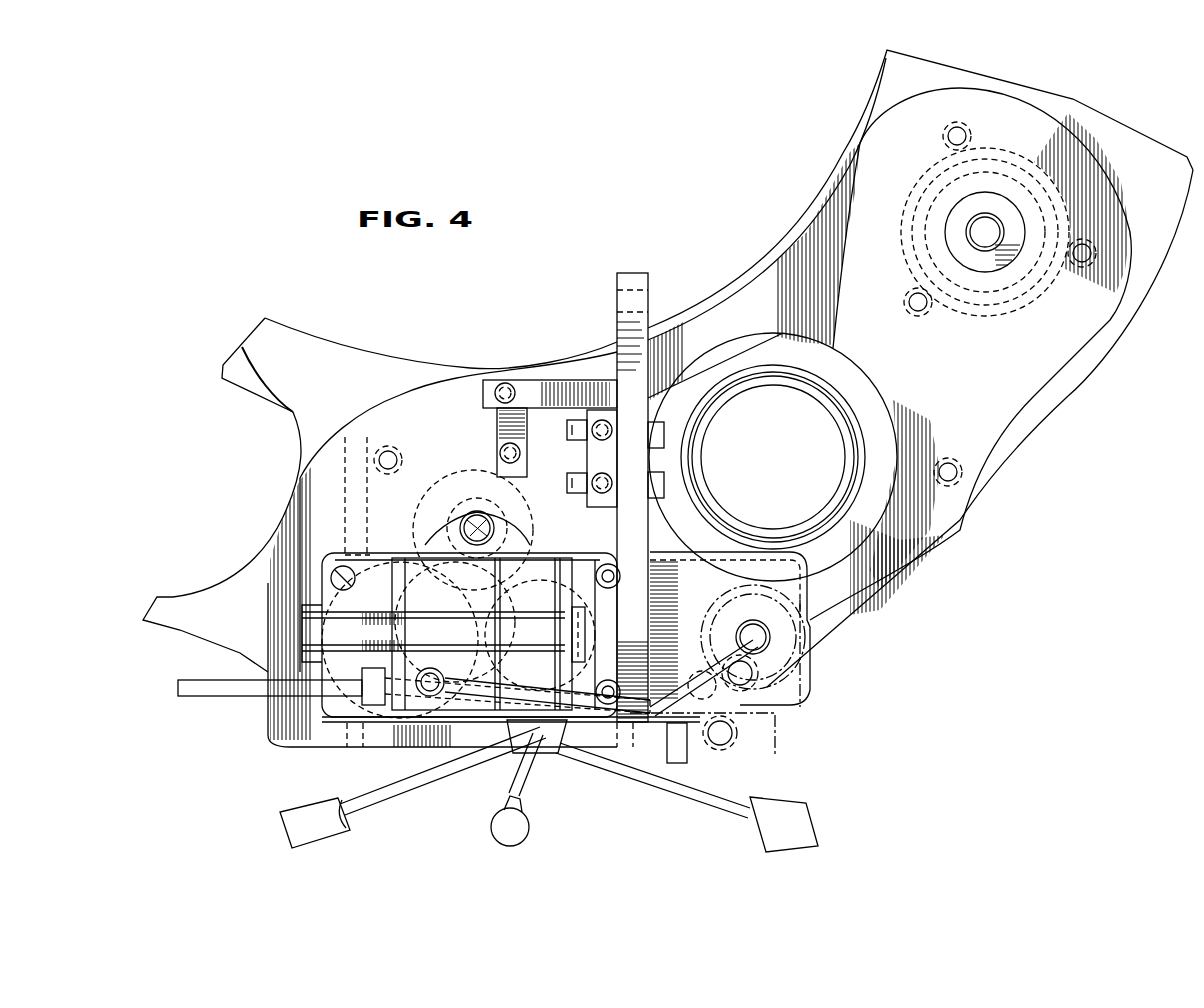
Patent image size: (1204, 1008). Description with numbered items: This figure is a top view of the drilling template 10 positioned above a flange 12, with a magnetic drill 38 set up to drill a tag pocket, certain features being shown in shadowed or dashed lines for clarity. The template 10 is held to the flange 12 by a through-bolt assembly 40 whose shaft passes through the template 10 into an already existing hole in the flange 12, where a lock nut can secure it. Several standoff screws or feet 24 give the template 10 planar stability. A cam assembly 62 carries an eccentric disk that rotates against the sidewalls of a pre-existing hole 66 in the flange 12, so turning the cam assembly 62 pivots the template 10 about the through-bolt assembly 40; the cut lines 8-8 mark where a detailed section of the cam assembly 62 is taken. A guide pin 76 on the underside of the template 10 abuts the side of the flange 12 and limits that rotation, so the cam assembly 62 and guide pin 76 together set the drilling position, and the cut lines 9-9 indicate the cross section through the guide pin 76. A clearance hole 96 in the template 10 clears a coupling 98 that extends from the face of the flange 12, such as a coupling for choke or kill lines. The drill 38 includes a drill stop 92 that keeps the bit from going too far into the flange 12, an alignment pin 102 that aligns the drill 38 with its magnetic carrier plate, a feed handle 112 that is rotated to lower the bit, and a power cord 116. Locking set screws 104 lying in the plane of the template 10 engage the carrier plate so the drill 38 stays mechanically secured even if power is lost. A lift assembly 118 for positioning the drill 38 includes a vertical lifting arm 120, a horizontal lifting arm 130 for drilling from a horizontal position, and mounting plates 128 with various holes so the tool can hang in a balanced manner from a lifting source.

The template 10 is at (803, 237).
The flange 12 is at (262, 330).
The foot 24 is at (958, 121).
The drill 38 is at (546, 778).
The through-bolt assembly 40 is at (1000, 219).
The cam assembly 62 is at (477, 498).
The pre-existing hole 66 is at (440, 470).
The guide pin 76 is at (765, 688).
The drill stop 92 is at (698, 697).
The clearance hole 96 is at (868, 378).
The coupling 98 is at (852, 447).
The alignment pin 102 is at (332, 578).
The locking set screws 104 is at (347, 533).
The feed handle 112 is at (328, 834).
The power cord 116 is at (232, 697).
The lift assembly 118 is at (602, 410).
The vertical lifting arm 120 is at (635, 588).
The mounting plates 128 is at (523, 385).
The horizontal lifting arm 130 is at (630, 272).
The cut lines 8- 8 is at (380, 505).
The cut lines 9- 9 is at (750, 571).